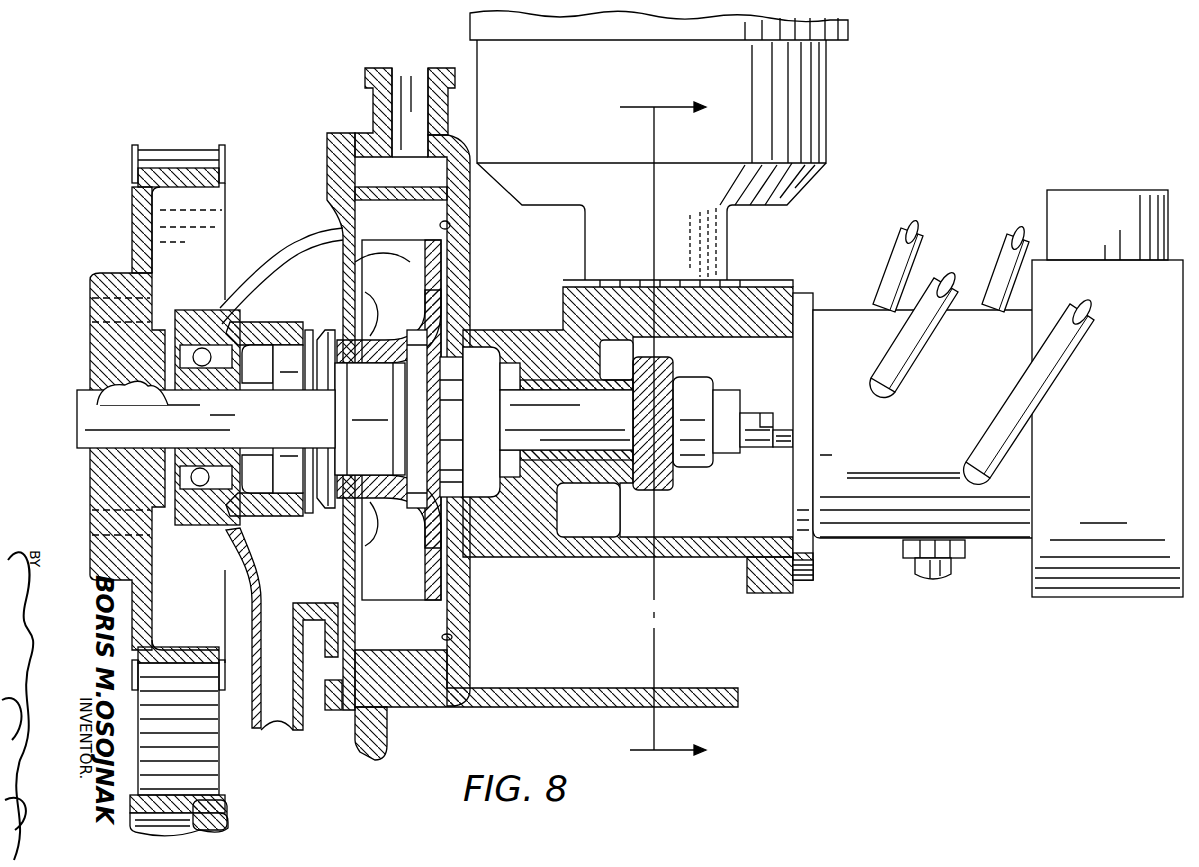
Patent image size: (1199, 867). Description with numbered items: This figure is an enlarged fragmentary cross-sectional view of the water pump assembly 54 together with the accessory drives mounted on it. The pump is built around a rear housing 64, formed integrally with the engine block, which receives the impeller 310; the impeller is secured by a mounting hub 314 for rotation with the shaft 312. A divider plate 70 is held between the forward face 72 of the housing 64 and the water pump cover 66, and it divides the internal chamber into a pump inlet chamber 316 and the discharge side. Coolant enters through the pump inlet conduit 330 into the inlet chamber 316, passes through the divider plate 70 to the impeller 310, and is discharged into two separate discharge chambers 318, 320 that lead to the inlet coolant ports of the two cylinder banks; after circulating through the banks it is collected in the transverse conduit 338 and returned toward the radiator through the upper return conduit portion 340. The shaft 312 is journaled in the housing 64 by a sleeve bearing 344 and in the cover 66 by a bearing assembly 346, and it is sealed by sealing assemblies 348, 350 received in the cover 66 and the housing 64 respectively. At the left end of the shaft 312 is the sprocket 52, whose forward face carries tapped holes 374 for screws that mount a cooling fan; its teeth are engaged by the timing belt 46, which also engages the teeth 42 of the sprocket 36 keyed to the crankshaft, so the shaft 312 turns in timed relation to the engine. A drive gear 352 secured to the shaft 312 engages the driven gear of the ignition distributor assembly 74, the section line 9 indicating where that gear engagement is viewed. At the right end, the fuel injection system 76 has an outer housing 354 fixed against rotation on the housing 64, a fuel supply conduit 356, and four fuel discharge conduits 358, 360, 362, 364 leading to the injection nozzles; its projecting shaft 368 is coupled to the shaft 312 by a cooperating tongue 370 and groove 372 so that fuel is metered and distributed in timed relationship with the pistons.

The sprocket 36 is at (240, 819).
The teeth 42 is at (228, 792).
The timing belt 46 is at (220, 735).
The sprocket 52 is at (132, 200).
The water pump assembly 54 is at (288, 193).
The housing portion 64 is at (476, 214).
The water pump cover 66 is at (269, 254).
The divider plate 70 is at (343, 277).
The forward face 72 is at (382, 714).
The ignition distributor assembly 74 is at (836, 105).
The fuel injection system 76 is at (1000, 582).
The impeller 310 is at (452, 612).
The shaft 312 is at (100, 445).
The mounting hub 314 is at (405, 520).
The pump inlet chamber 316 is at (312, 301).
The discharge chamber 318 is at (452, 638).
The discharge chamber 320 is at (450, 228).
The pump inlet conduit 330 is at (290, 731).
The transverse conduit 338 is at (368, 185).
The upper return conduit portion 340 is at (430, 72).
The sleeve bearing 344 is at (548, 388).
The bearing assembly 346 is at (200, 526).
The sealing assembly 348 is at (326, 496).
The sealing assembly 350 is at (472, 547).
The drive gear 352 is at (667, 492).
The outer housing 354 is at (858, 572).
The fuel supply conduit 356 is at (920, 580).
The fuel discharge conduit 358 is at (892, 246).
The fuel discharge conduit 360 is at (1027, 236).
The fuel discharge conduit 362 is at (933, 345).
The fuel discharge conduit 364 is at (1066, 352).
The projecting shaft 368 is at (778, 393).
The tongue 370 is at (750, 453).
The groove 372 is at (760, 410).
The tapped holes 374 is at (96, 312).
The section line 9- 9 is at (675, 431).